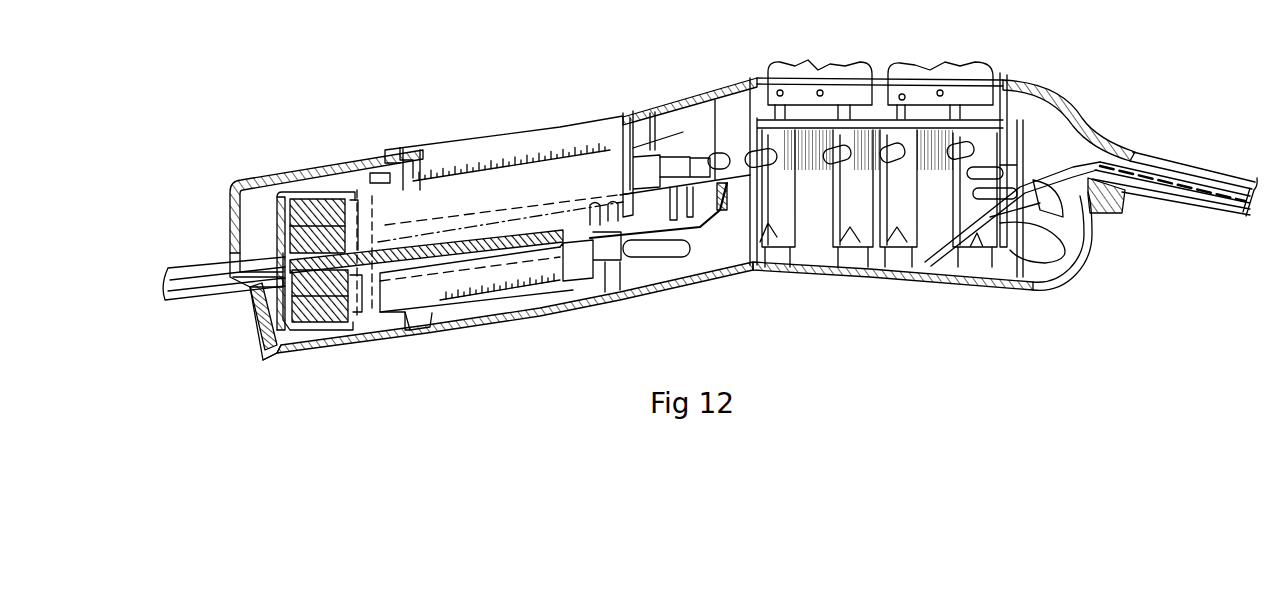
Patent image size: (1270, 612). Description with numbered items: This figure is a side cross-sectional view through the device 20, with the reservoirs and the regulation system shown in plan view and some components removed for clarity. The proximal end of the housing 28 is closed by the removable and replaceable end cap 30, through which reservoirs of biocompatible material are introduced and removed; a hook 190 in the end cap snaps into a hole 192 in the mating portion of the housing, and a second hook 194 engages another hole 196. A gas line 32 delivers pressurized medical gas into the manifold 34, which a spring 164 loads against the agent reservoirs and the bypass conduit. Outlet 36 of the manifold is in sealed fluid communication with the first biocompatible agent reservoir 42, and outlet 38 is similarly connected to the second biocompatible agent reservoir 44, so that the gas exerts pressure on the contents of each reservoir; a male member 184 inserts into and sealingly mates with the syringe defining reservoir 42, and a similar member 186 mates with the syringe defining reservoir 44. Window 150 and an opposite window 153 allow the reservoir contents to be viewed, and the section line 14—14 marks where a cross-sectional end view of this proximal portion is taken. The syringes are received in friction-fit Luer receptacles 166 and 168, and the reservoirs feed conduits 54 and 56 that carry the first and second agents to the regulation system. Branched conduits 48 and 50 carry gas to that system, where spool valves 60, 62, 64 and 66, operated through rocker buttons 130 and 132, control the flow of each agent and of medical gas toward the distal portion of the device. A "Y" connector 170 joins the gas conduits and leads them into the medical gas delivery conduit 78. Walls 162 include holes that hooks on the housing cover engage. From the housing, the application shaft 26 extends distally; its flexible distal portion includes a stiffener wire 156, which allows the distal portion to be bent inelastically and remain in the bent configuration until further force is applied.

The device 20 is at (635, 46).
The application shaft 26 is at (1213, 214).
The housing 28 is at (815, 284).
The end cap 30 is at (224, 181).
The gas line 32 is at (183, 299).
The manifold 34 is at (285, 221).
The outlet 36 is at (297, 328).
The outlet 38 is at (292, 235).
The first biocompatible agent reservoir 42 is at (550, 288).
The second biocompatible agent reservoir 44 is at (575, 146).
The conduit 48 is at (843, 135).
The conduit 50 is at (903, 143).
The conduit 54 is at (967, 142).
The conduit 56 is at (716, 108).
The spool valve 60 is at (772, 245).
The spool valve 62 is at (850, 240).
The spool valve 64 is at (900, 240).
The spool valve 66 is at (977, 245).
The medical gas delivery conduit 78 is at (1070, 147).
The rocker button 130 is at (815, 70).
The rocker button 132 is at (942, 66).
The window 150 is at (470, 150).
The window 153 is at (483, 320).
The stiffener wire 156 is at (1207, 176).
The walls 162 is at (1062, 243).
The spring 164 is at (258, 332).
The Luer receptacle 166 is at (598, 263).
The Luer receptacle 168 is at (680, 150).
The "Y" connector 170 is at (1050, 137).
The male member 184 is at (337, 333).
The member 186 is at (324, 191).
The hook 190 is at (390, 150).
The hole 192 is at (397, 152).
The hook 194 is at (418, 340).
The hole 196 is at (432, 337).
The section line 14 is at (490, 82).